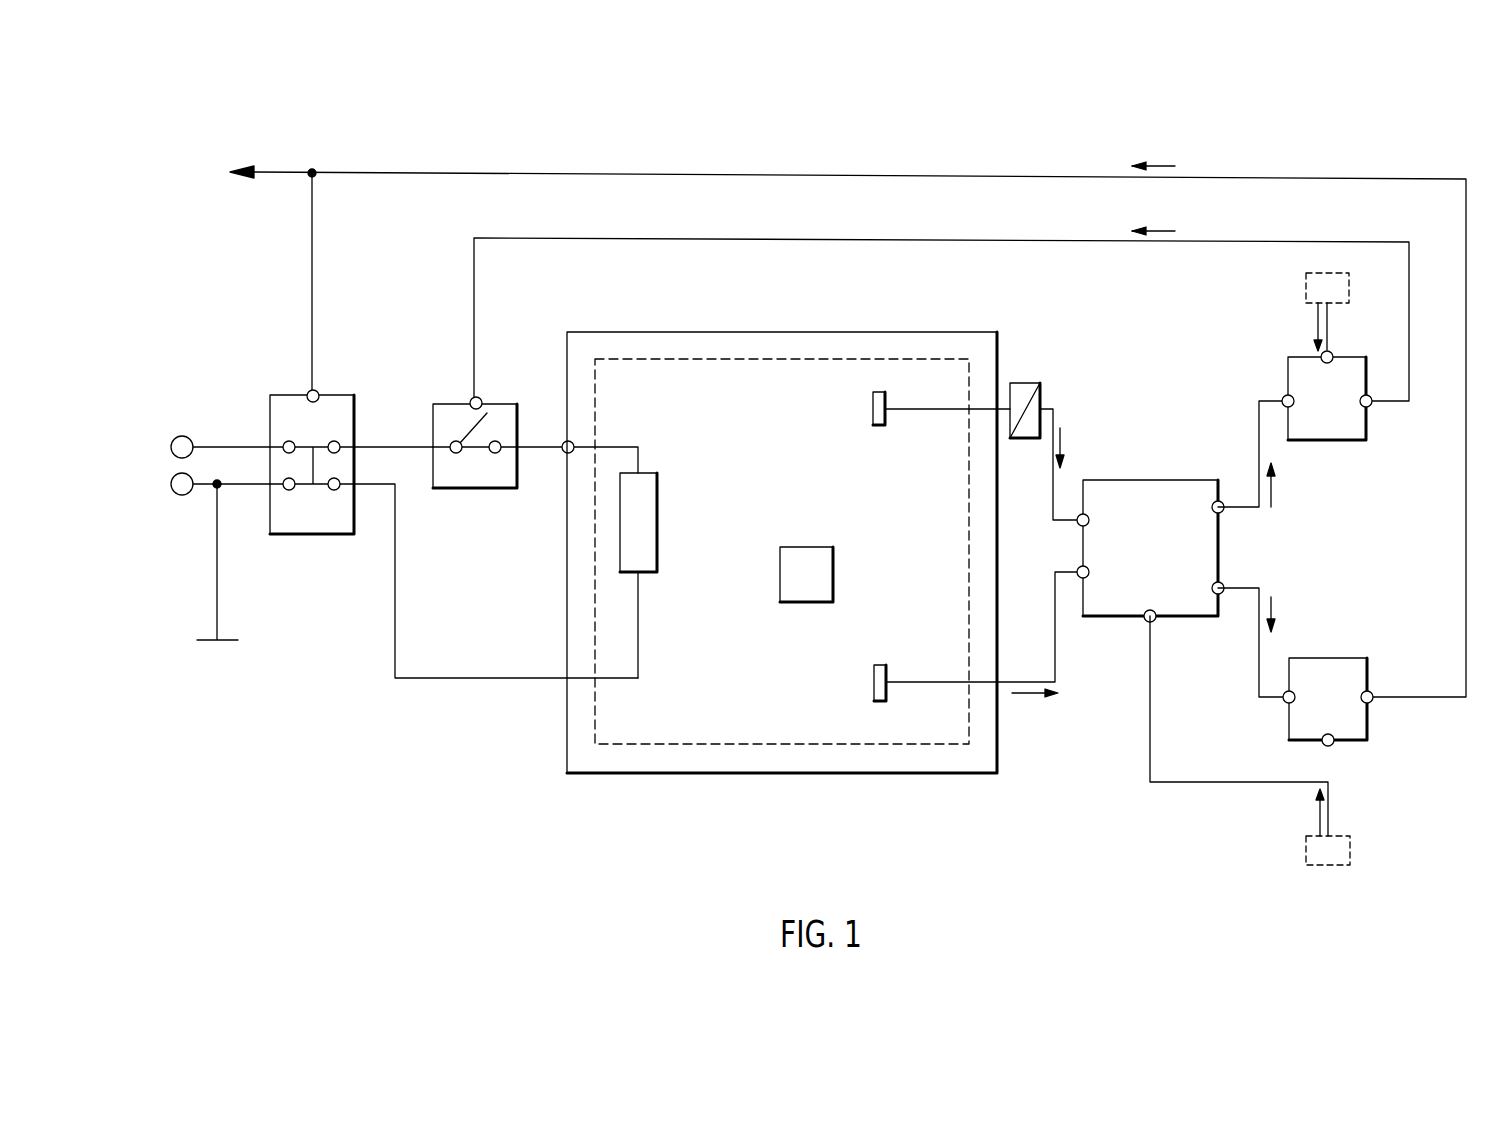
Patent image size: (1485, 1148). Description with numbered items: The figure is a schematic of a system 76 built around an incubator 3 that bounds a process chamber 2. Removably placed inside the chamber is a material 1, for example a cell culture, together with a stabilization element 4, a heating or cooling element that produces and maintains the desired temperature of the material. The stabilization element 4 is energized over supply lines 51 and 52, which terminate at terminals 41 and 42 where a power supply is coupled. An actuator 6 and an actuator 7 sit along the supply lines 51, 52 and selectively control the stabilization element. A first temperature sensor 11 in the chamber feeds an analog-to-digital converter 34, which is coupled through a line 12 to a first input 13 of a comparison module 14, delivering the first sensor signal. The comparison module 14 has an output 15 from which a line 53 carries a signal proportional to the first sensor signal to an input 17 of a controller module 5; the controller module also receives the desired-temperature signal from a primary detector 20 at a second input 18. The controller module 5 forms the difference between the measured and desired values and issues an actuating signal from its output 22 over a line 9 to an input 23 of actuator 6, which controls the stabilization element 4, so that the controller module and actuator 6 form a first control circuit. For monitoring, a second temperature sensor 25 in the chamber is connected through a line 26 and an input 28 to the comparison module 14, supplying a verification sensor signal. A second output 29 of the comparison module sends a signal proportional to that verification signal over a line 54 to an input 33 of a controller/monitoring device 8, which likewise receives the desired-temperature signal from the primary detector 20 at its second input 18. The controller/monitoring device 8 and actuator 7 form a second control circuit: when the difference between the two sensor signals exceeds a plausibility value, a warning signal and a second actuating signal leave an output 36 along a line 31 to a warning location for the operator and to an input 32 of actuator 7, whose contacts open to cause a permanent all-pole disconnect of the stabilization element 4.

The material 1 is at (820, 574).
The process chamber 2 is at (720, 744).
The incubator 3 is at (591, 773).
The stabilization element 4 is at (647, 528).
The controller module 5 is at (1337, 430).
The actuator 6 is at (472, 478).
The actuator 7 is at (305, 524).
The controller/monitoring device 8 is at (1358, 713).
The line 9 is at (860, 238).
The first temperature sensor 11 is at (872, 410).
The line 12 is at (1056, 423).
The first input 13 is at (1078, 517).
The comparison module 14 is at (1183, 614).
The output 15 is at (1222, 500).
The input 17 is at (1283, 397).
The second input 18 is at (1332, 352).
The primary detector 20 is at (1340, 288).
The output 22 is at (1370, 405).
The input 23 is at (481, 398).
The second temperature sensor 25 is at (876, 687).
The line 26 is at (1057, 660).
The input 28 is at (1078, 570).
The output 29 is at (1224, 585).
The line 31 is at (878, 176).
The input 32 is at (318, 392).
The input 33 is at (1283, 702).
The analog-to-digital converter 34 is at (1022, 383).
The output 36 is at (1372, 692).
The terminal 41 is at (185, 435).
The terminal 42 is at (186, 496).
The supply line 51 is at (378, 447).
The supply line 52 is at (468, 680).
The line 53 is at (1258, 437).
The line 54 is at (1262, 672).
The system 76 is at (478, 818).